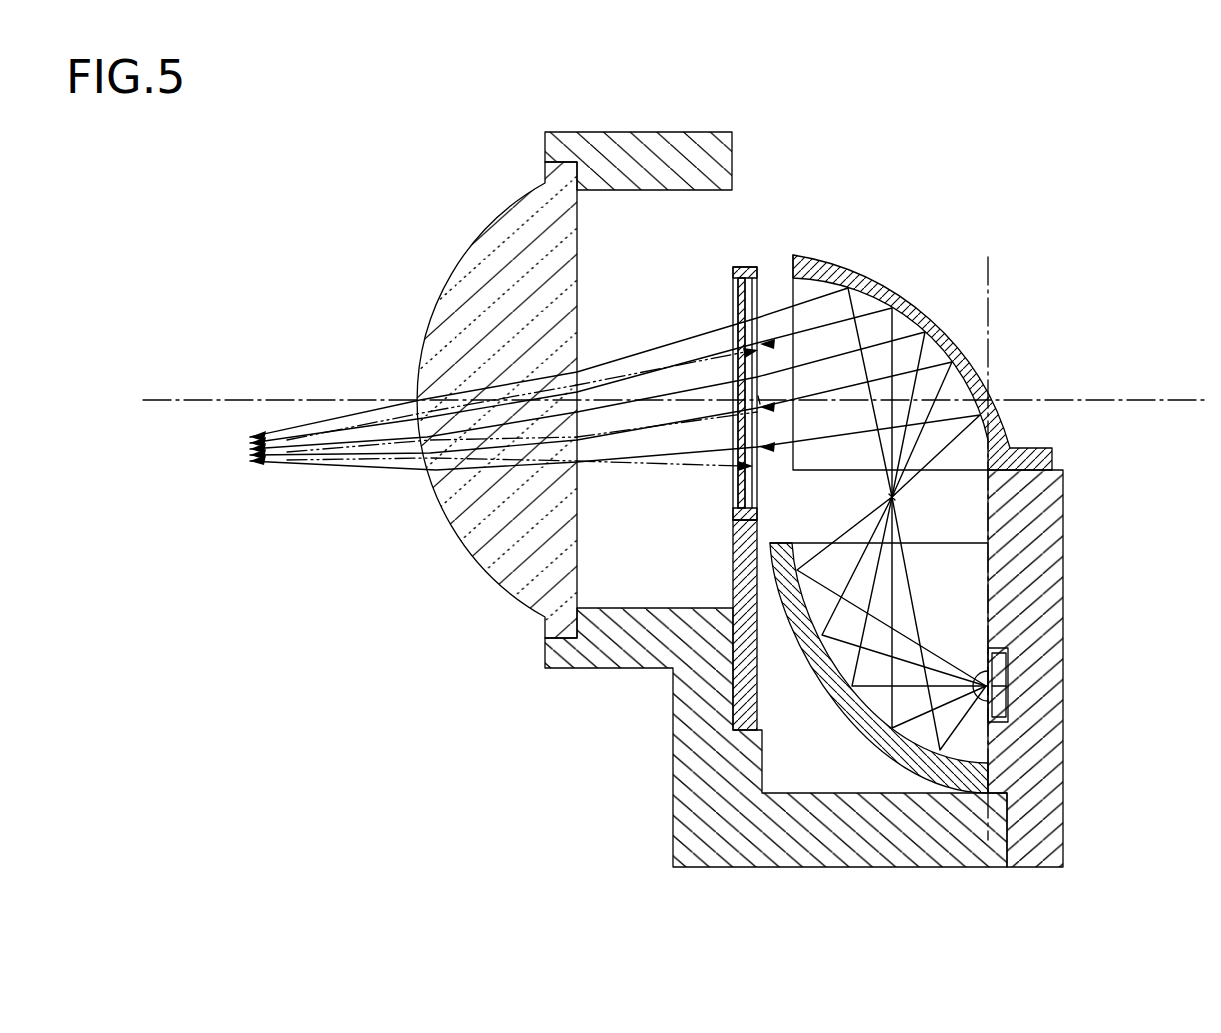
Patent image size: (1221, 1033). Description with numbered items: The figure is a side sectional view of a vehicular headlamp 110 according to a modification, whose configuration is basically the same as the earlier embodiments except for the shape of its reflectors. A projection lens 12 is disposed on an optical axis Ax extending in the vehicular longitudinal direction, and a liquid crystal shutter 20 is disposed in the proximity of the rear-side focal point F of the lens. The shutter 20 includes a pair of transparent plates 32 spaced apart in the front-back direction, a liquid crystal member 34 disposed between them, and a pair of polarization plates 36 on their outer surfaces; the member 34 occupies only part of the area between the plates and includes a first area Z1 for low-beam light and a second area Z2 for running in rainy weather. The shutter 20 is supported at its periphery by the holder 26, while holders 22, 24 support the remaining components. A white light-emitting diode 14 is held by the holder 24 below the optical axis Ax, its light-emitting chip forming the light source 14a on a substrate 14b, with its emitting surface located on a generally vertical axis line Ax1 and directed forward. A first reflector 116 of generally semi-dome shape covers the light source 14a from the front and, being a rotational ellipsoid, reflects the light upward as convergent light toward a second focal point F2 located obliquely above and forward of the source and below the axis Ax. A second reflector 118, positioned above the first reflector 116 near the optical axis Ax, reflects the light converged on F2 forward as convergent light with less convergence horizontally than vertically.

The vehicular headlamp 110 is at (360, 186).
The projection lens 12 is at (440, 290).
The white light-emitting diode 14 is at (1031, 652).
The light source 14a is at (1008, 681).
The substrate 14b is at (1002, 691).
The liquid crystal shutter 20 is at (716, 399).
The holder 22 is at (674, 782).
The holder 24 is at (1044, 598).
The holder 26 is at (736, 570).
The transparent plates 32 is at (735, 304).
The liquid crystal member 34 is at (760, 346).
The polarization plates 36 is at (745, 372).
The first reflector 116 is at (828, 701).
The second reflector 118 is at (901, 293).
The optical axis Ax is at (218, 397).
The axis line Ax1 is at (992, 316).
The rear-side focal point F is at (764, 398).
The second focal point F2 is at (897, 499).
The first area Z1 is at (744, 468).
The second area Z2 is at (745, 356).